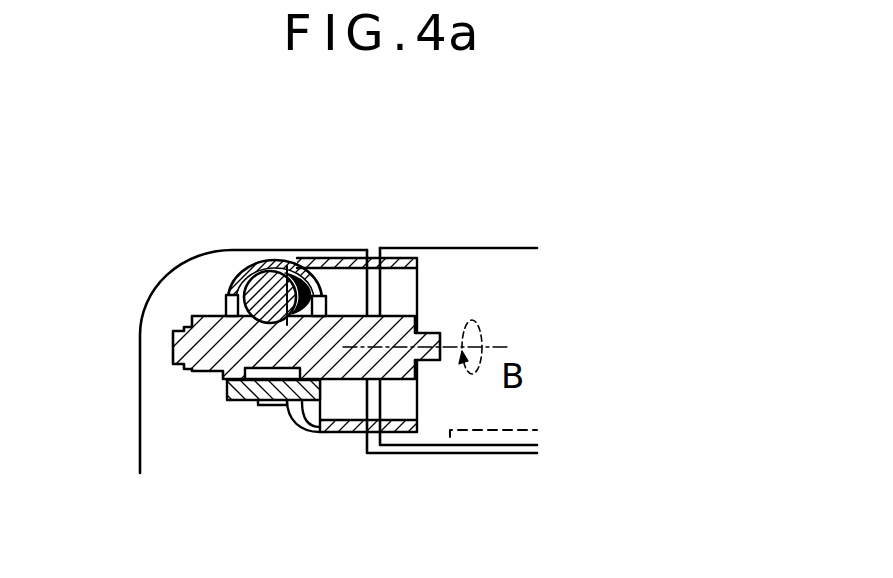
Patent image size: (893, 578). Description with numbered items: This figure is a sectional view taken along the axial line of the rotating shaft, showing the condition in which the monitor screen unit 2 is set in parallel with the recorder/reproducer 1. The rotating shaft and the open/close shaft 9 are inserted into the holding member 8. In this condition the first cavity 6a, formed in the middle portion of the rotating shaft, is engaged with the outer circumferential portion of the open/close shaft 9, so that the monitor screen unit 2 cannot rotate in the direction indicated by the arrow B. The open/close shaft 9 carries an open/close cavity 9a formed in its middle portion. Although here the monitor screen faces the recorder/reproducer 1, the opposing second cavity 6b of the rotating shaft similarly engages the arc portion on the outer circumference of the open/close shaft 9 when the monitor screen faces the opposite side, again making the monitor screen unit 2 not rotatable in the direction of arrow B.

The recorder/reproducer 1 is at (177, 416).
The monitor screen unit 2 is at (452, 410).
The first cavity 6a is at (318, 292).
The second cavity 6b is at (267, 373).
The holding member 8 is at (219, 297).
The open/close shaft 9 is at (268, 262).
The open/close cavity 9a is at (290, 265).